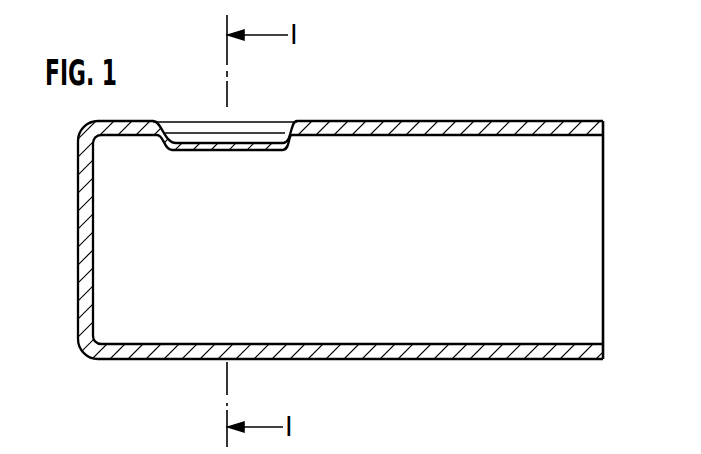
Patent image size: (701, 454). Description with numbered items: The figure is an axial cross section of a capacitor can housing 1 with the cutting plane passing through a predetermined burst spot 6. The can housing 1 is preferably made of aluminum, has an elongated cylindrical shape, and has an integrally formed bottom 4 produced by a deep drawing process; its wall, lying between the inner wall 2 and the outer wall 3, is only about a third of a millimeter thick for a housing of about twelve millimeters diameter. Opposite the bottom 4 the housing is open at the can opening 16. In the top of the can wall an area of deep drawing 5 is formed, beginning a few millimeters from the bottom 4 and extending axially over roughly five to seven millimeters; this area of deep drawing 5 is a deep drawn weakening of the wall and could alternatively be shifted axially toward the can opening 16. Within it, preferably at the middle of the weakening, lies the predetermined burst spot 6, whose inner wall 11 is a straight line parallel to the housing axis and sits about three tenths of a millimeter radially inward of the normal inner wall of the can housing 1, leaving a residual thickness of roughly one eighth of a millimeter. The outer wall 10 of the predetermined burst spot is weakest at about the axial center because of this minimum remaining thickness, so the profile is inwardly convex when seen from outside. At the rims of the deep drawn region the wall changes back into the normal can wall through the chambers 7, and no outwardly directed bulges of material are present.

The can housing 1 is at (455, 131).
The inner wall 2 is at (578, 140).
The outer wall 3 is at (551, 362).
The bottom 4 is at (77, 243).
The area of deep drawing 5 is at (233, 134).
The predetermined burst spot 6 is at (222, 151).
The chambers 7 is at (287, 150).
The outer wall of the predetermined burst spot 10 is at (184, 130).
The inner wall of the predetermined burst spot 11 is at (188, 152).
The can opening 16 is at (605, 269).